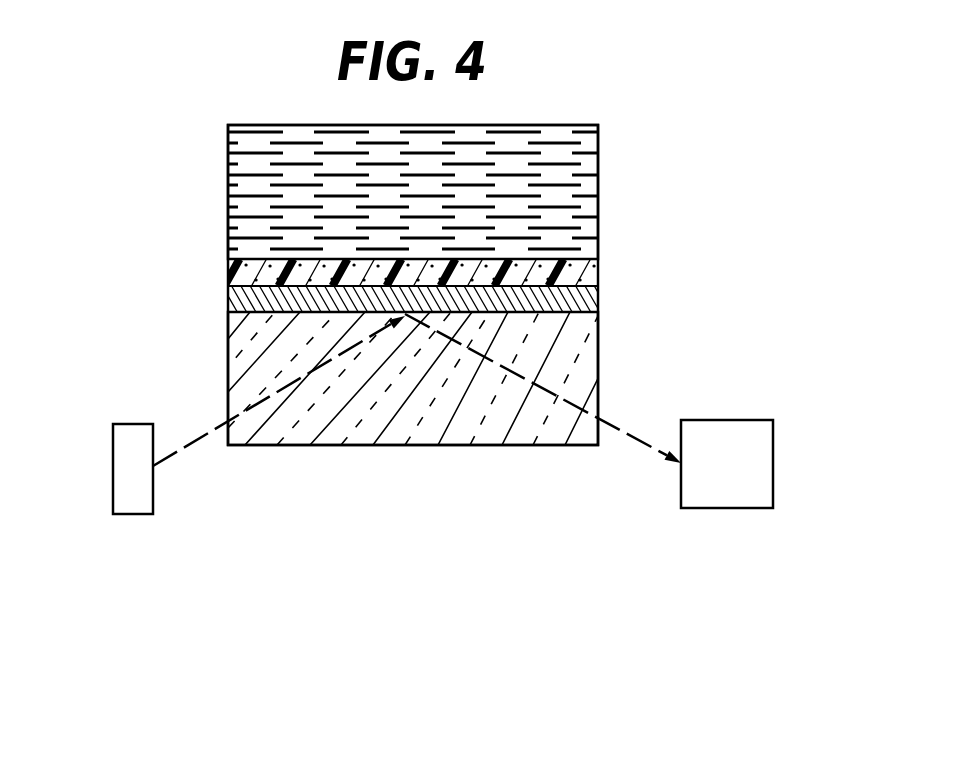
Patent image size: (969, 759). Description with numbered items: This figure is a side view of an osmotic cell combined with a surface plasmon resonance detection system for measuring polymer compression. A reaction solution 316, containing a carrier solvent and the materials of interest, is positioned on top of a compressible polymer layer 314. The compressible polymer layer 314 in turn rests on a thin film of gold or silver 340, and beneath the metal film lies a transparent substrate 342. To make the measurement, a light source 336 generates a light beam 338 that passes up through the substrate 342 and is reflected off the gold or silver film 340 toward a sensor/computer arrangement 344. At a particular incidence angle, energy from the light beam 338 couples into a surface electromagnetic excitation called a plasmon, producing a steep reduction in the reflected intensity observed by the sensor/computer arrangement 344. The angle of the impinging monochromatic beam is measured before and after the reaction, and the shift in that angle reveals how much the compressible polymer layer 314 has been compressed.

The reaction solution 316 is at (590, 185).
The compressible polymer layer 314 is at (593, 268).
The thin film of gold or silver 340 is at (593, 295).
The substrate 342 is at (590, 365).
The light beam 338 is at (206, 447).
The light source 336 is at (124, 468).
The sensor/computer arrangement 344 is at (755, 461).